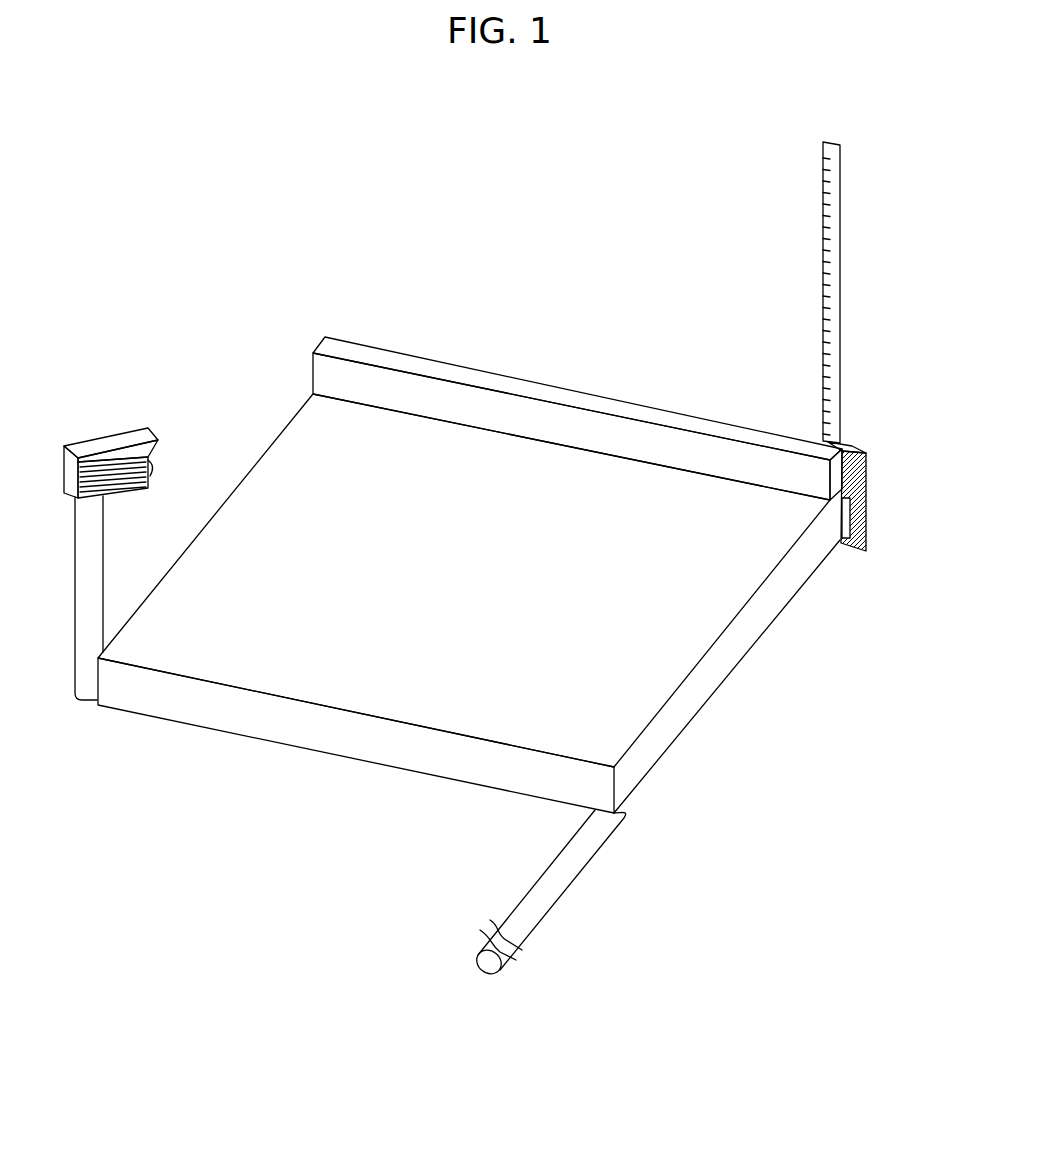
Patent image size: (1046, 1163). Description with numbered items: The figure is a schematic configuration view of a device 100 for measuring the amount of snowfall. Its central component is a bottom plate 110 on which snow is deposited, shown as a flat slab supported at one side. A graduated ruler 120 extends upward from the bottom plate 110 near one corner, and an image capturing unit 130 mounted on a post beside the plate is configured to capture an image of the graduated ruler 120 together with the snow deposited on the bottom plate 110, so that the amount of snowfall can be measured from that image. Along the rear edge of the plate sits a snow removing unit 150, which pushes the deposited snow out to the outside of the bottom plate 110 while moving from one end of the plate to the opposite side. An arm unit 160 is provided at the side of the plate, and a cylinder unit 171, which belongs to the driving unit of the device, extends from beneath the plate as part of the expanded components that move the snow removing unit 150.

The device for measuring the amount of snowfall 100 is at (358, 762).
The bottom plate 110 is at (145, 703).
The graduated ruler 120 is at (835, 215).
The image capturing unit 130 is at (98, 447).
The snow removing unit 150 is at (353, 347).
The arm unit 160 is at (855, 476).
The cylinder unit 171 is at (555, 875).